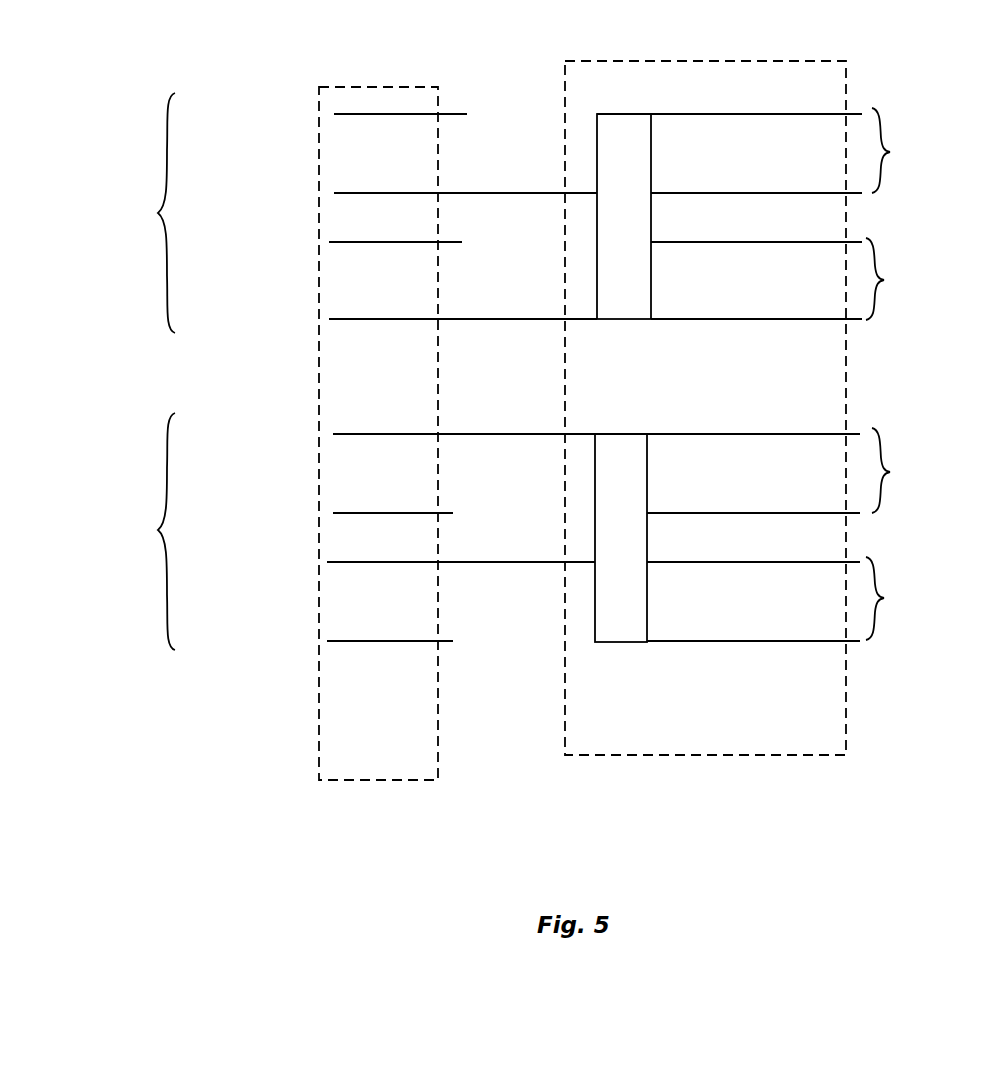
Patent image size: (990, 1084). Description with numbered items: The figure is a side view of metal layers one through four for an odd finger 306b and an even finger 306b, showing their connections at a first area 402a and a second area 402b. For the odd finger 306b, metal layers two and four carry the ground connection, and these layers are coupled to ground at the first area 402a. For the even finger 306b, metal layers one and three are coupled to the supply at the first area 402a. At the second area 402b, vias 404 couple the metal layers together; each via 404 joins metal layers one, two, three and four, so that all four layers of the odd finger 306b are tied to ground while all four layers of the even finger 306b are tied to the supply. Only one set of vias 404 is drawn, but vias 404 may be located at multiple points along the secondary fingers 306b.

The secondary finger 306b is at (530, 371).
The first area 402a is at (378, 433).
The second area 402b is at (705, 408).
The via 404 is at (622, 113).